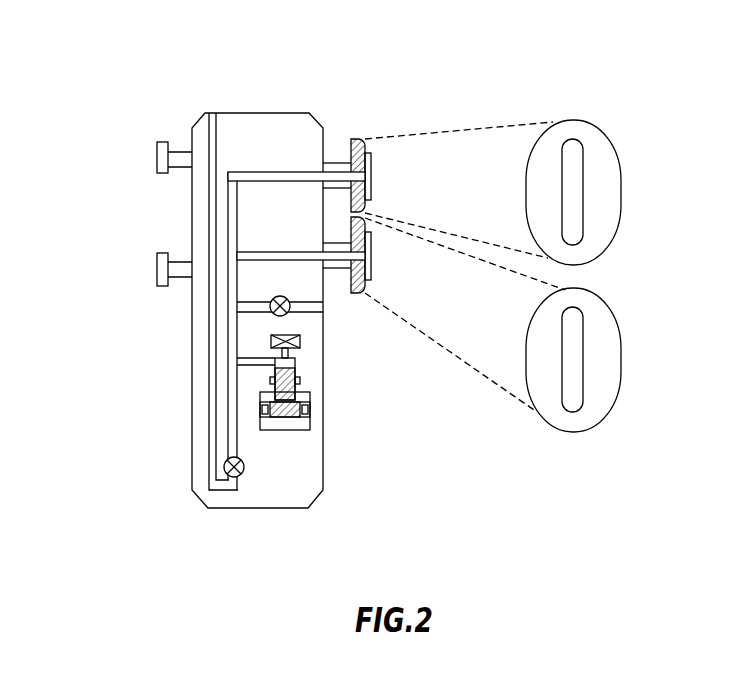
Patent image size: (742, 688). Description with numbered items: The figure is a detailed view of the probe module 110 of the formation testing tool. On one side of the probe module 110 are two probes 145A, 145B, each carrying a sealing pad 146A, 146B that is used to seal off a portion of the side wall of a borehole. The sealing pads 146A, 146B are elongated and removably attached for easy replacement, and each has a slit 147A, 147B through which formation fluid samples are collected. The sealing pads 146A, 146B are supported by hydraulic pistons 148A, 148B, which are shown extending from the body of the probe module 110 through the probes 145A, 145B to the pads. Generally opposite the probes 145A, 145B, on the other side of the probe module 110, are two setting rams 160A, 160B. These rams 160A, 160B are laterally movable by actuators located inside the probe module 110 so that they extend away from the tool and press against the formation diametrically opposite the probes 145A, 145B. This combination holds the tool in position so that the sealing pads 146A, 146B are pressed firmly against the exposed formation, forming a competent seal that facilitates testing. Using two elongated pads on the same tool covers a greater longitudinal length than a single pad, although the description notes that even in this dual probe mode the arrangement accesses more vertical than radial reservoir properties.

The probe module 110 is at (183, 88).
The probe 145A is at (358, 124).
The probe 145B is at (380, 262).
The sealing pad 146A is at (603, 170).
The sealing pad 146B is at (603, 382).
The slit 147A is at (579, 198).
The slit 147B is at (580, 354).
The hydraulic piston 148A is at (335, 153).
The hydraulic piston 148B is at (337, 275).
The setting ram 160A is at (153, 153).
The setting ram 160B is at (153, 263).